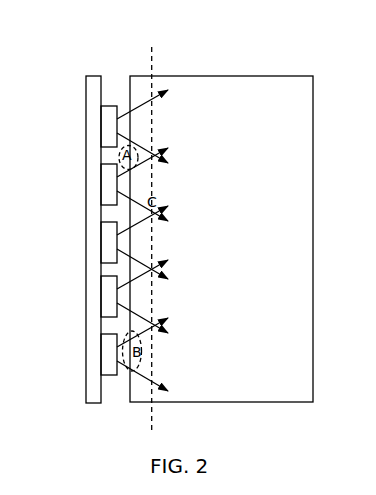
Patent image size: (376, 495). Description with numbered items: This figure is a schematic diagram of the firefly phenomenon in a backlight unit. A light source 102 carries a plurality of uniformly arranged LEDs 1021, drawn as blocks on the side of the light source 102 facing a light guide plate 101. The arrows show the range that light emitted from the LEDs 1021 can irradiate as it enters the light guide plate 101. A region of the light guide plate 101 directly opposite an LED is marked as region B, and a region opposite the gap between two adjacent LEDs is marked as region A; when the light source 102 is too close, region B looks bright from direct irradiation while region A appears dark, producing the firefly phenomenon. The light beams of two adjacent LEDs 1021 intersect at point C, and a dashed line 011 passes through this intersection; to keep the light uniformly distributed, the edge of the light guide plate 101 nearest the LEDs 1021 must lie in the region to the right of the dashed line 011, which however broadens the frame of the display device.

The light guide plate 101 is at (182, 77).
The light source 102 is at (86, 77).
The LEDs 1021 is at (109, 106).
The dashed line 011 is at (152, 55).